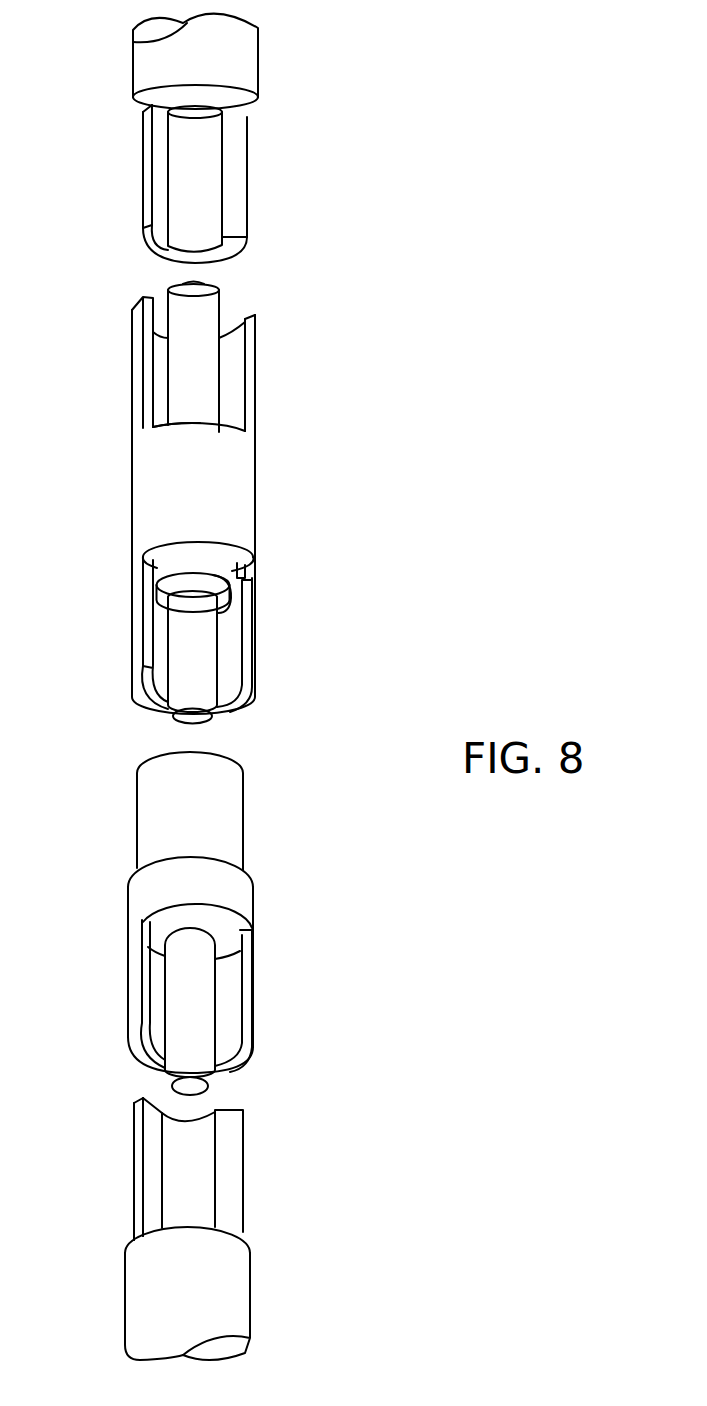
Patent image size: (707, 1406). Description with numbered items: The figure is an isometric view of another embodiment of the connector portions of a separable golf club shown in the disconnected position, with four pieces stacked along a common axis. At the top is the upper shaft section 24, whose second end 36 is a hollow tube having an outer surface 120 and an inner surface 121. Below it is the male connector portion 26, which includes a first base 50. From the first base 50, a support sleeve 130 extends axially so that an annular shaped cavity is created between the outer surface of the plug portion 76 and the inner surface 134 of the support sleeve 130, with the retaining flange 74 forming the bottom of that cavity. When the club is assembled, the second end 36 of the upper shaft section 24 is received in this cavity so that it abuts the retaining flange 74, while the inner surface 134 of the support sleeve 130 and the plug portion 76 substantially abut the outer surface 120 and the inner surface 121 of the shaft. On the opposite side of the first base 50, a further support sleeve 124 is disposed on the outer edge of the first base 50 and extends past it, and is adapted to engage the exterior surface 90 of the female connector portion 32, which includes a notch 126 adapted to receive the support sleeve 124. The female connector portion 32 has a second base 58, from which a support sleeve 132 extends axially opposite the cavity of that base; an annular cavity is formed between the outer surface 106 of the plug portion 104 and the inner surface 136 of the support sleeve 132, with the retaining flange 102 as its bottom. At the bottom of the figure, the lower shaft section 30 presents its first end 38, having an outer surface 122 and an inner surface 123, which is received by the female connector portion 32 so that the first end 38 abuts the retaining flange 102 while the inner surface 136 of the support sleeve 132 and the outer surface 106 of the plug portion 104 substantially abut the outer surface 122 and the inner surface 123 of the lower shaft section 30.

The upper shaft section 24 is at (242, 138).
The second end of the upper shaft section 36 is at (237, 172).
The outer surface of the upper shaft section 120 is at (140, 177).
The inner surface of the upper shaft section 121 is at (203, 218).
The male connector portion 26 is at (280, 497).
The plug portion 76 is at (185, 282).
The retaining flange 74 is at (158, 423).
The inner surface of the support sleeve 134 is at (230, 361).
The support sleeve 130 is at (248, 395).
The first base 50 is at (242, 570).
The support sleeve 124 is at (250, 630).
The female connector portion 32 is at (265, 923).
The exterior surface of the second base 90 is at (233, 805).
The notch 126 is at (250, 855).
The retaining flange 102 is at (178, 913).
The second base 58 is at (255, 907).
The inner surface of the support sleeve 136 is at (228, 991).
The support sleeve 132 is at (247, 1027).
The outer surface of the plug portion 106 is at (205, 1055).
The plug portion 104 is at (178, 1090).
The lower shaft section 30 is at (227, 1229).
The first end of the lower shaft section 38 is at (230, 1162).
The outer surface of the lower shaft section 122 is at (135, 1195).
The inner surface of the lower shaft section 123 is at (198, 1202).